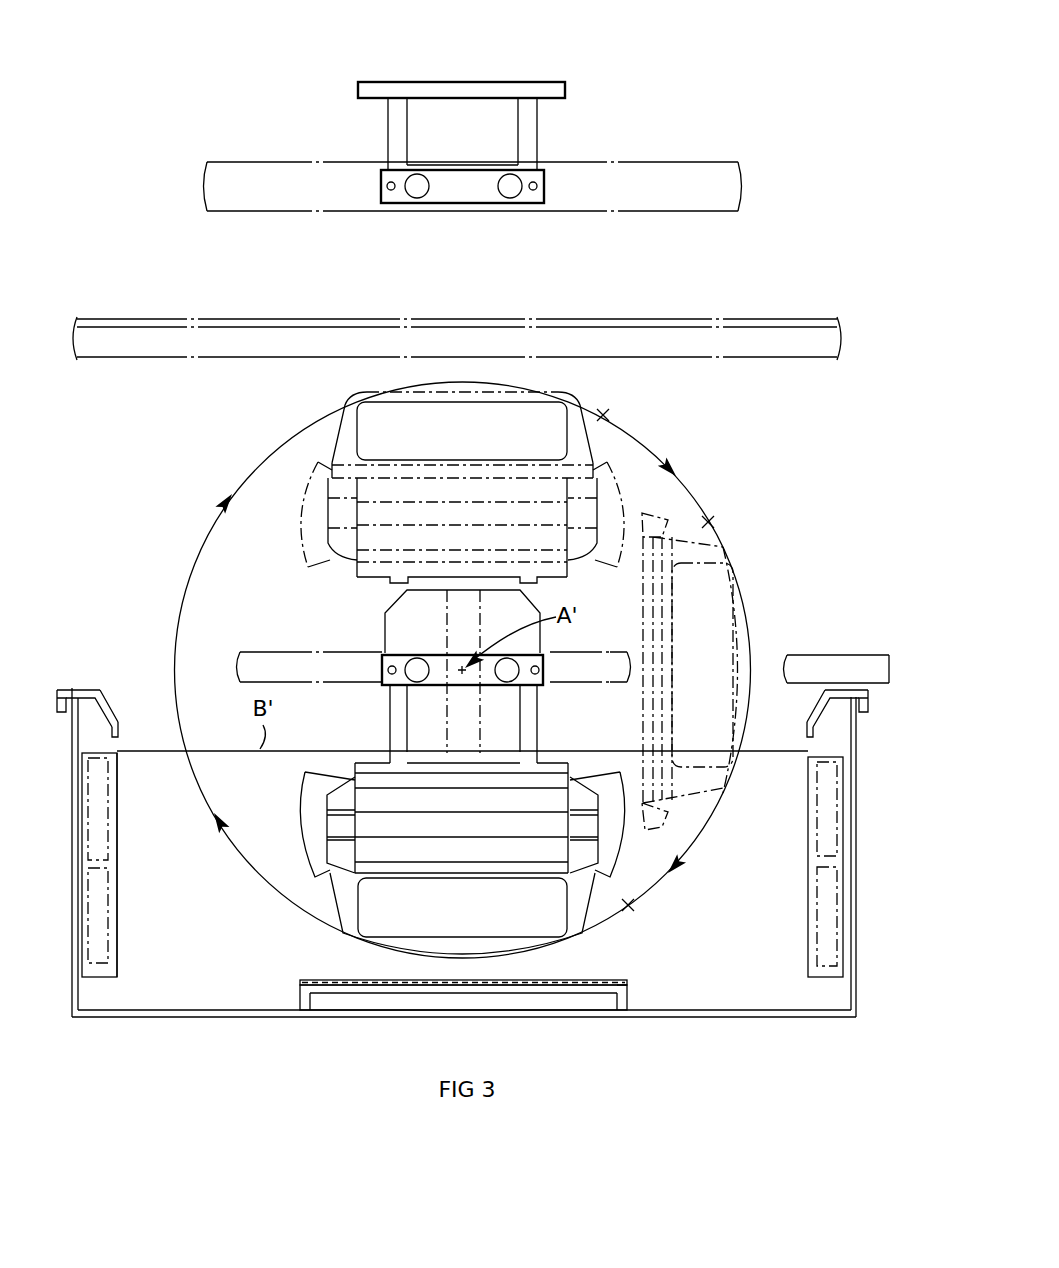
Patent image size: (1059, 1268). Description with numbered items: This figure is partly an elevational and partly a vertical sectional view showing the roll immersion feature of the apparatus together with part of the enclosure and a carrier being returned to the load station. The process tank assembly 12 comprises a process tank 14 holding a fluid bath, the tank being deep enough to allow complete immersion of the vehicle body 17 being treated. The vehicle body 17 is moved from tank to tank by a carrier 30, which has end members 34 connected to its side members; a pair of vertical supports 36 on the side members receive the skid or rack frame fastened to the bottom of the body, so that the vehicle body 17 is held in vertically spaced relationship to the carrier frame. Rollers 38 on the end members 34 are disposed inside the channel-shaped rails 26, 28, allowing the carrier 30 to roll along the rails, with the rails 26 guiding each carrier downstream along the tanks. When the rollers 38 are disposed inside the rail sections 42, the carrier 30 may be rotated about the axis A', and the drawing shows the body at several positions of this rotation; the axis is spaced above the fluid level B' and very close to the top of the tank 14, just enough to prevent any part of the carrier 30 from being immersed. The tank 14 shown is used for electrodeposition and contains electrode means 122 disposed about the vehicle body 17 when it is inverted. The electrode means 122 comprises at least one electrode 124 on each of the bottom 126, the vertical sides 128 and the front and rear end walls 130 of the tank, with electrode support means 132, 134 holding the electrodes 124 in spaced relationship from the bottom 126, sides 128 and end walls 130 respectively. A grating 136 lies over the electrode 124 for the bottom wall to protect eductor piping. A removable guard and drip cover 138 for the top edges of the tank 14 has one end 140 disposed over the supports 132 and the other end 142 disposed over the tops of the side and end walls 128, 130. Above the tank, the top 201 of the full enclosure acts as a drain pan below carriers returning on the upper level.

The process tank assembly 12 is at (484, 876).
The process tank 14 is at (856, 795).
The vehicle body 17 is at (618, 406).
The channel-shaped rail 26 is at (270, 652).
The channel-shaped rail 28 is at (686, 160).
The carrier 30 is at (539, 68).
The end member 34 is at (447, 204).
The vertical support 36 is at (388, 130).
The roller 38 is at (413, 193).
The rail section 42 is at (552, 650).
The electrode means 122 is at (132, 905).
The electrode 124 is at (105, 957).
The bottom 126 is at (730, 990).
The vertical side 128 is at (73, 847).
The end wall 130 is at (182, 930).
The electrode support means 132 is at (627, 1002).
The electrode support means 134 is at (110, 814).
The grating 136 is at (333, 980).
The removable guard and drip cover 138 is at (103, 693).
The end of drip cover 140 is at (118, 731).
The end of drip cover 142 is at (83, 688).
The top of enclosure 201 is at (760, 317).